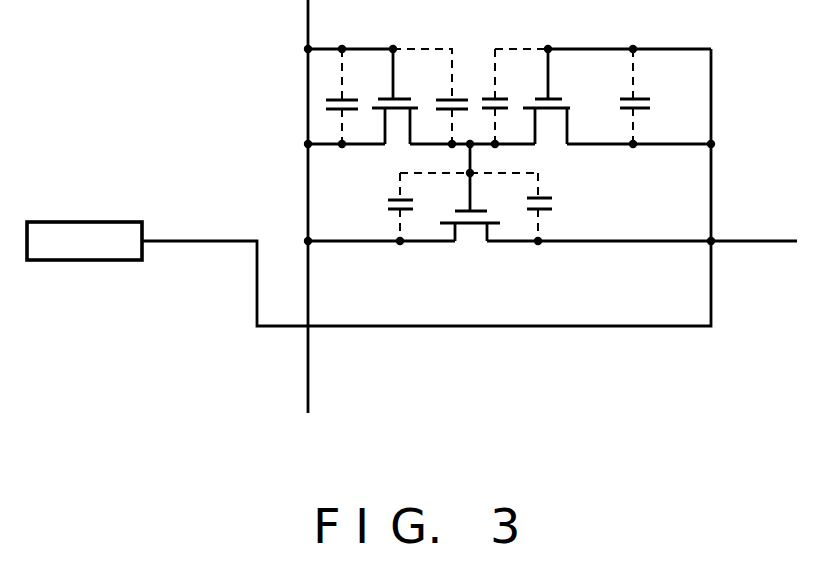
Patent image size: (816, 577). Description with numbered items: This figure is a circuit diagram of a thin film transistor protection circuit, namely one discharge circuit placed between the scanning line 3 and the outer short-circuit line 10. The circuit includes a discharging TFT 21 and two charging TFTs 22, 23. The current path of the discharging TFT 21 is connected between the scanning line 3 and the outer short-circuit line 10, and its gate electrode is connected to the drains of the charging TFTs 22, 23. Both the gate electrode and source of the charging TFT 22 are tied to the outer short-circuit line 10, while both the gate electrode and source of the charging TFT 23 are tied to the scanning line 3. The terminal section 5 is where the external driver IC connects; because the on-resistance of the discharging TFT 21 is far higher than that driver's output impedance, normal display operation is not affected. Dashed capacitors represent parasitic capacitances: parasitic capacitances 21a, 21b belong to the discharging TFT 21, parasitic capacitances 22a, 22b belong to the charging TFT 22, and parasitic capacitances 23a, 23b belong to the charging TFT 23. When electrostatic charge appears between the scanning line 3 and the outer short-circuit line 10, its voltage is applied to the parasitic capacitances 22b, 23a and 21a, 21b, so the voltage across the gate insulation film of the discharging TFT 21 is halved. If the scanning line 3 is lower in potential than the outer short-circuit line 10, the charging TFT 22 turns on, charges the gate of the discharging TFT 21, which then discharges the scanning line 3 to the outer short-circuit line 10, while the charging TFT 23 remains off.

The scanning line 3 is at (733, 241).
The terminal section 5 is at (124, 248).
The outer short-circuit line 10 is at (310, 408).
The discharging TFT 21 is at (473, 228).
The parasitic capacitance 21a is at (385, 207).
The parasitic capacitance 21b is at (555, 205).
The charging TFT 22 is at (397, 117).
The parasitic capacitance 22a is at (358, 97).
The parasitic capacitance 22b is at (435, 93).
The charging TFT 23 is at (553, 113).
The parasitic capacitance 23a is at (508, 92).
The parasitic capacitance 23b is at (652, 101).